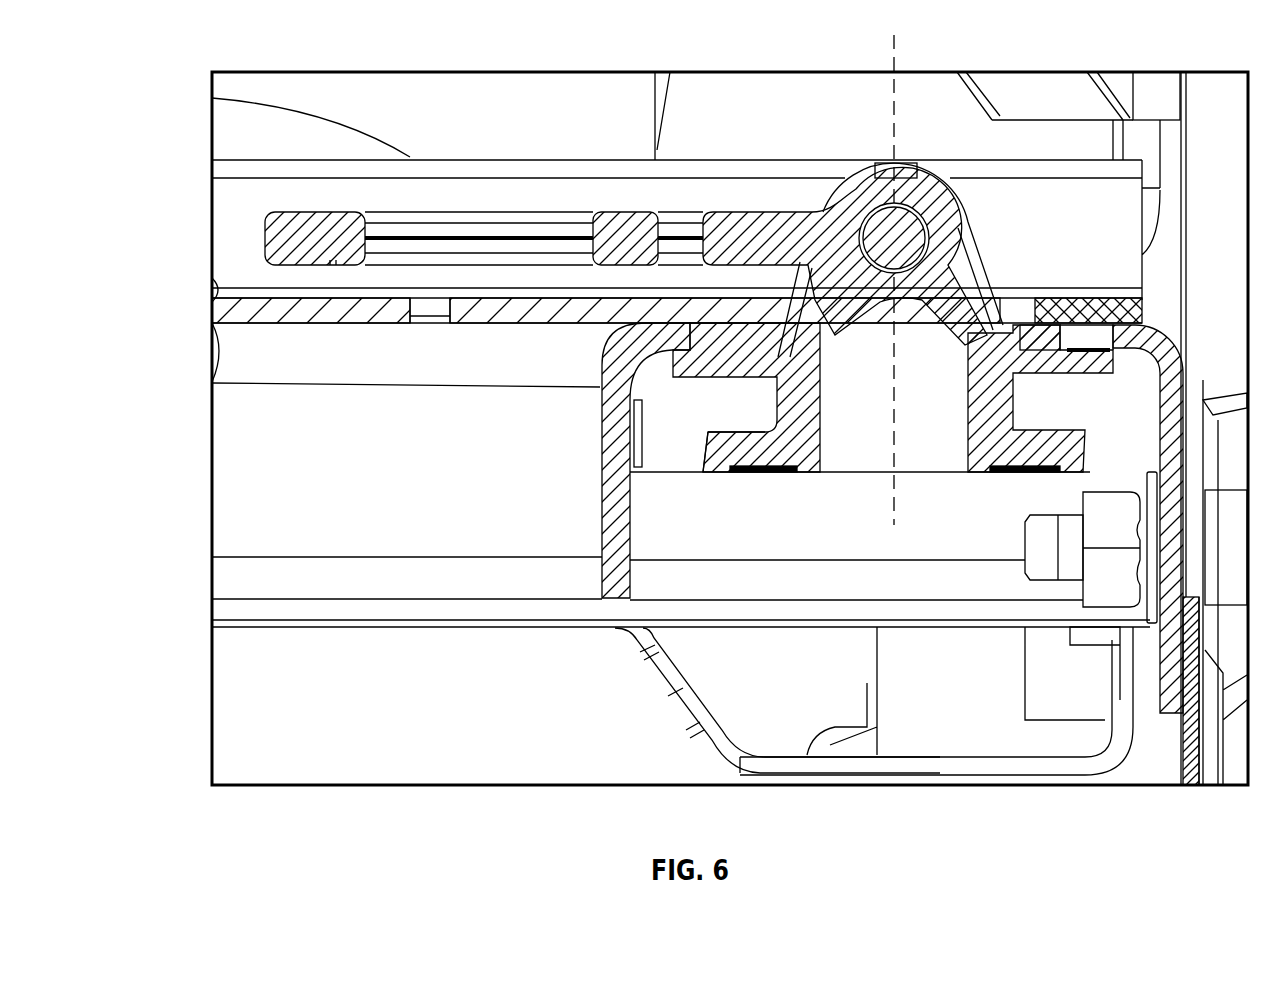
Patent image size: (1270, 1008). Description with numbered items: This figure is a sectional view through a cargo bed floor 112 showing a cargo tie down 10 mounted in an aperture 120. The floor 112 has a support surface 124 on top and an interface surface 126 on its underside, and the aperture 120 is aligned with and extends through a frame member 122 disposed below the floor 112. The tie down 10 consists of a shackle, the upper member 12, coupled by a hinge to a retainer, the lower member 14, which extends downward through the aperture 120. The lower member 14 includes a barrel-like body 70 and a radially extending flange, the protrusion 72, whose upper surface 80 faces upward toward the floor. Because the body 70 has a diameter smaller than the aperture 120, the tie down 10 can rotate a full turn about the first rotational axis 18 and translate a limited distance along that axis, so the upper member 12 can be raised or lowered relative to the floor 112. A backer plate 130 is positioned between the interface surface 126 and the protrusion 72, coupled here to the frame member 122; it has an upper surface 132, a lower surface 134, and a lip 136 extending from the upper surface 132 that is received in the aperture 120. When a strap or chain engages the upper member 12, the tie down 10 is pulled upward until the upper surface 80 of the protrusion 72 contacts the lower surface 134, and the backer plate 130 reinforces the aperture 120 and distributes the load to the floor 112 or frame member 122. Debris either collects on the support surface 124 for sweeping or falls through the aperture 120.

The tie down 10 is at (937, 135).
The upper member 12 is at (493, 232).
The lower member 14 is at (812, 468).
The first rotational axis 18 is at (900, 62).
The body 70 is at (792, 383).
The protrusion 72 is at (703, 462).
The upper surface 80 is at (722, 432).
The floor 112 is at (232, 310).
The aperture 120 is at (1011, 300).
The frame member 122 is at (604, 515).
The support surface 124 is at (213, 290).
The interface surface 126 is at (216, 350).
The backer plate 130 is at (1097, 378).
The upper surface 132 is at (1064, 330).
The lower surface 134 is at (1065, 375).
The lip 136 is at (1042, 345).